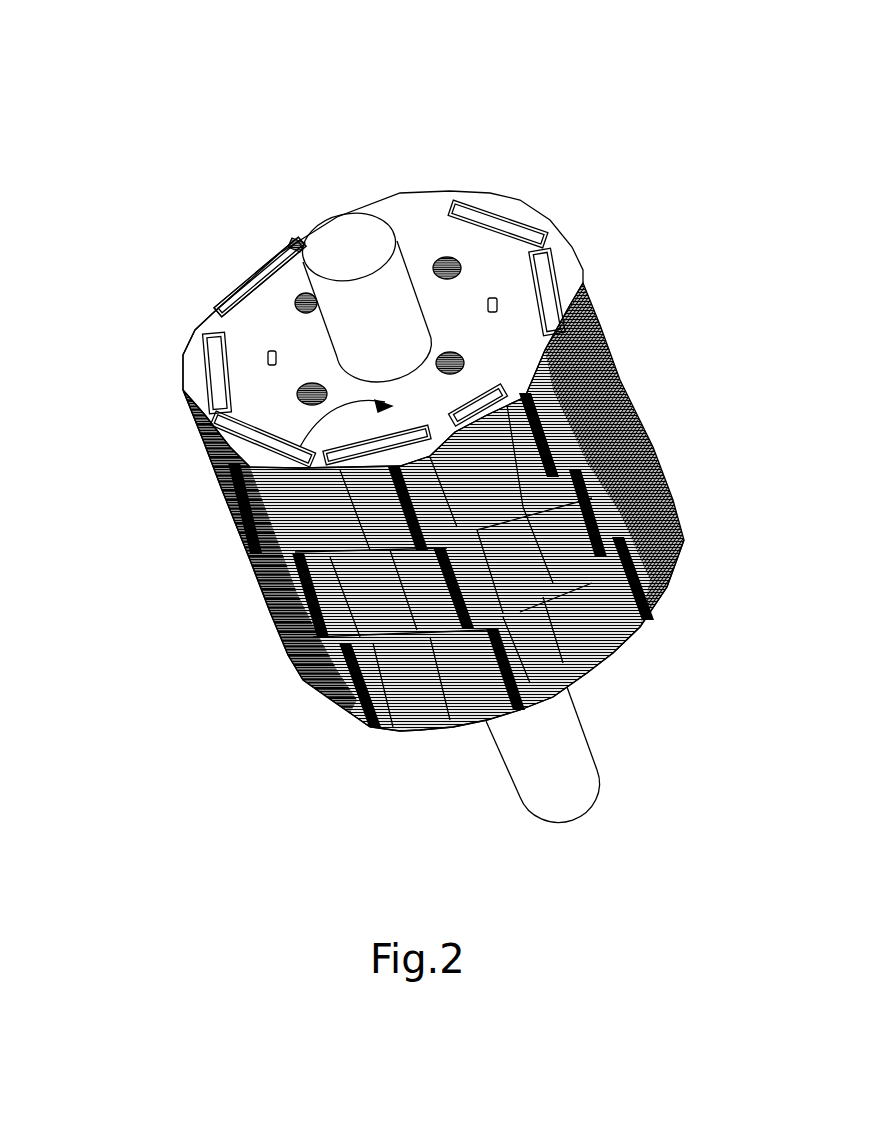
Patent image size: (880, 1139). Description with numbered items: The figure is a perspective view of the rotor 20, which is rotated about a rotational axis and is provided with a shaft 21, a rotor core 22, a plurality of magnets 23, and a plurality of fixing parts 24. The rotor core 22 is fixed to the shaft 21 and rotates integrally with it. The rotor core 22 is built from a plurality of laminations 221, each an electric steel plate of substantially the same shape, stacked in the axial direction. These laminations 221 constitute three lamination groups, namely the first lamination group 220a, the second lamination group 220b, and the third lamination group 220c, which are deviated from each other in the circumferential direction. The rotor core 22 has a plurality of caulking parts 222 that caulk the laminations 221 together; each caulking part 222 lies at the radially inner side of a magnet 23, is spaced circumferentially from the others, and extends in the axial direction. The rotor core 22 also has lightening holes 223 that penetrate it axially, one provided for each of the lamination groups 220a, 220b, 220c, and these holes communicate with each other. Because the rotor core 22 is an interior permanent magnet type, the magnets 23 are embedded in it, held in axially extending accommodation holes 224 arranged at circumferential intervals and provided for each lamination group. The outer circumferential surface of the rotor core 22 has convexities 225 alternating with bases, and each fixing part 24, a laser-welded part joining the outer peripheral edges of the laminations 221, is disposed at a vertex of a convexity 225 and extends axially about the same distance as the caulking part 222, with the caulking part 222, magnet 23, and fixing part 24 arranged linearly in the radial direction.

The rotor 20 is at (463, 92).
The shaft 21 is at (565, 728).
The rotor core 22 is at (496, 199).
The magnet 23 is at (258, 284).
The fixing part 24 is at (473, 713).
The first lamination group 220a is at (633, 368).
The second lamination group 220b is at (663, 445).
The third lamination group 220c is at (663, 445).
The lamination 221 is at (247, 363).
The caulking part 222 is at (227, 512).
The lightening hole 223 is at (443, 198).
The accommodation hole 224 is at (235, 290).
The convexity 225 is at (257, 590).